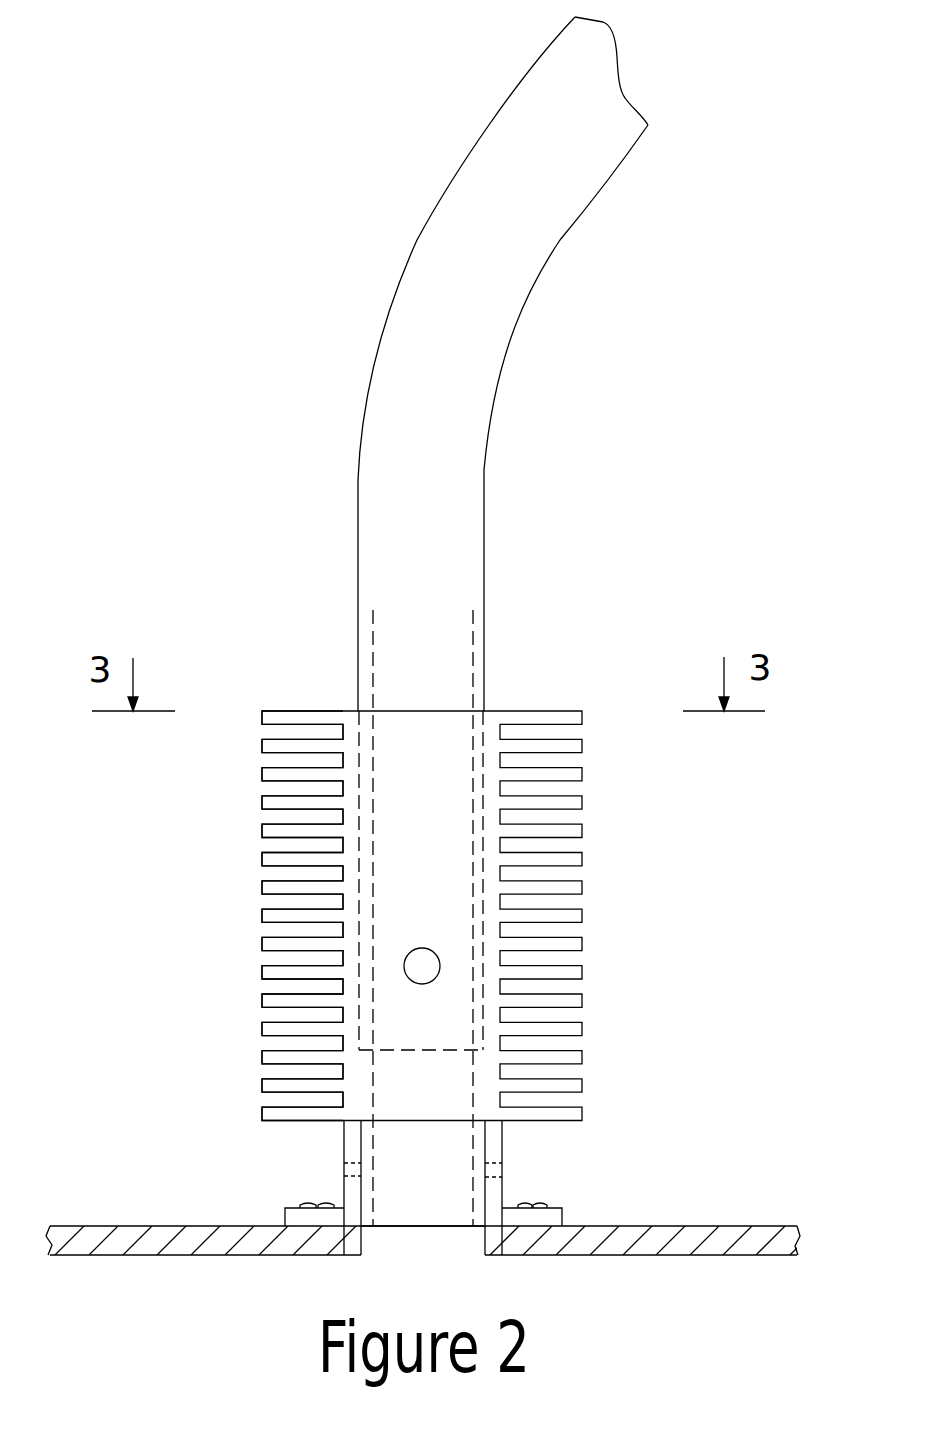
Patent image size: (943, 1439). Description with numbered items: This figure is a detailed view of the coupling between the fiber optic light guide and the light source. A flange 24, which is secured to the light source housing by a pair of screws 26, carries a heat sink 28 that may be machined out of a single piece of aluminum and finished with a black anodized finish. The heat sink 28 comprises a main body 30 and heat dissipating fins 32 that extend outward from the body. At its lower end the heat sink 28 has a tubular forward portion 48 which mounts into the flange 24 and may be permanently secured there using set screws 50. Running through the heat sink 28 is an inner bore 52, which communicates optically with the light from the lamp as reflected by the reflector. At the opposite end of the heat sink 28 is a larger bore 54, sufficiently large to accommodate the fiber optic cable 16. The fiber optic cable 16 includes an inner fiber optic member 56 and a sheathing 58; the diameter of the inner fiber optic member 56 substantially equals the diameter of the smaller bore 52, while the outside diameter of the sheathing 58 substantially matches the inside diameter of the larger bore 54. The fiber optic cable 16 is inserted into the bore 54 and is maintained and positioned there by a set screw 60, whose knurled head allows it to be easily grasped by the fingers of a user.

The fiber optic cable 16 is at (458, 197).
The flange 24 is at (558, 1217).
The screws 26 is at (300, 1205).
The heat sink 28 is at (326, 707).
The main body 30 is at (347, 1013).
The heat dissipating fins 32 is at (290, 790).
The tubular forward portion 48 is at (361, 1192).
The set screws 50 is at (495, 1170).
The inner bore 52 is at (472, 1212).
The larger bore 54 is at (483, 833).
The inner fiber optic member 56 is at (473, 648).
The sheathing 58 is at (484, 492).
The set screw 60 is at (424, 948).